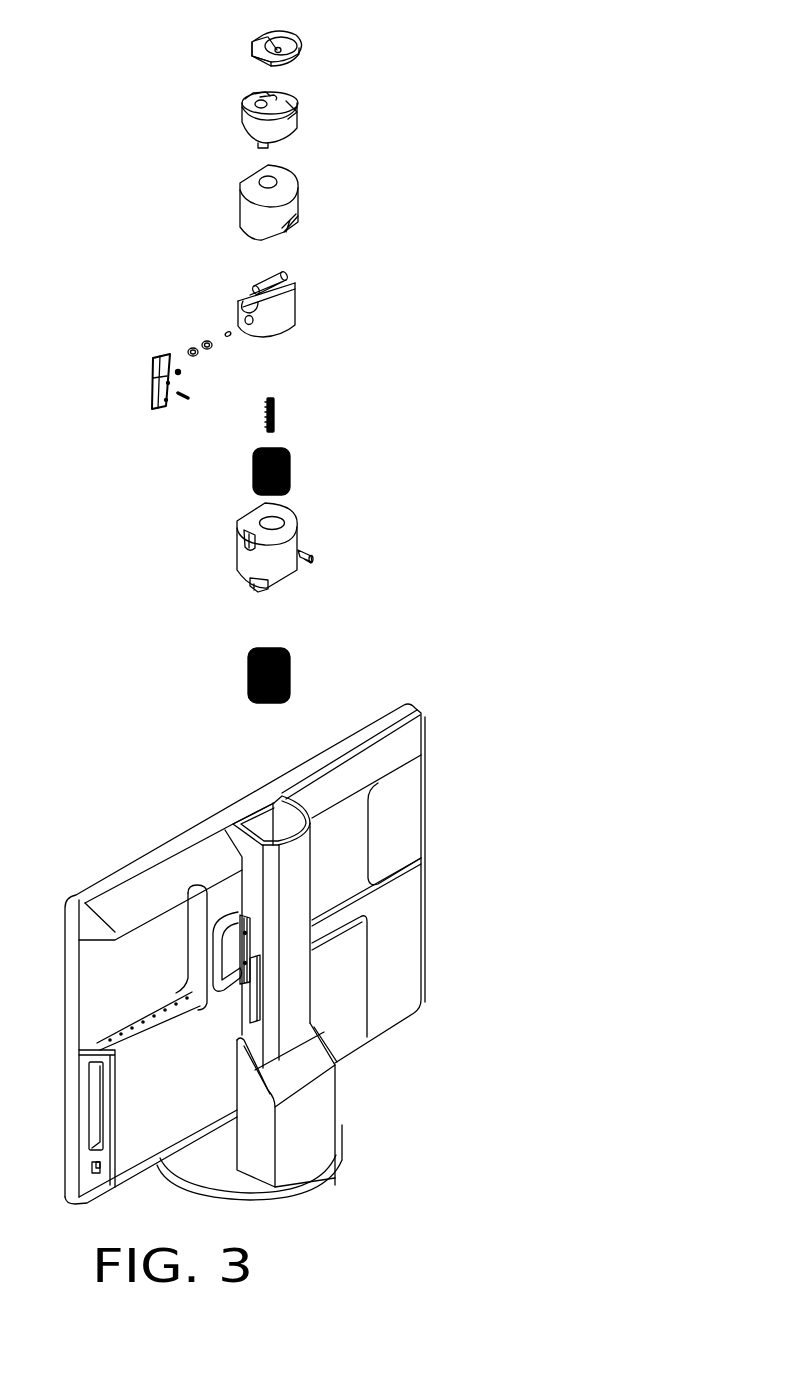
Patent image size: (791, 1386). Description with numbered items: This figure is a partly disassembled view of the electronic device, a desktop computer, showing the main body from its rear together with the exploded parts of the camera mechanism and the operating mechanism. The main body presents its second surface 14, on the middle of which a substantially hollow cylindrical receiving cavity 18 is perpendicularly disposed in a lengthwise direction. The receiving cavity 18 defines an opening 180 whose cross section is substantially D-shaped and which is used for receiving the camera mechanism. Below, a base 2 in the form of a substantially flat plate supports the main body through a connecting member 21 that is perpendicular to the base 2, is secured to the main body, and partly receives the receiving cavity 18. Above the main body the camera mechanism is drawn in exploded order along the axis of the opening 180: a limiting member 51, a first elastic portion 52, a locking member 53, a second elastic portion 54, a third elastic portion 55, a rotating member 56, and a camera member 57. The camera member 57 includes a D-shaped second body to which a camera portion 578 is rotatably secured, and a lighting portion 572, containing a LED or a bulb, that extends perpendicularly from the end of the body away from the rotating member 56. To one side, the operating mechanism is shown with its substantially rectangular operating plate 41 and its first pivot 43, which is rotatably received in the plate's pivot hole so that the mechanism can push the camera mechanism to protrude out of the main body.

The base 2 is at (217, 1160).
The second surface 14 is at (398, 814).
The receiving cavity 18 is at (293, 1023).
The connecting member 21 is at (312, 1126).
The operating plate 41 is at (153, 376).
The first pivot 43 is at (181, 400).
The limiting member 51 is at (280, 560).
The first elastic portion 52 is at (290, 676).
The locking member 53 is at (285, 322).
The second elastic portion 54 is at (290, 477).
The third elastic portion 55 is at (275, 413).
The rotating member 56 is at (290, 205).
The camera member 57 is at (397, 63).
The lighting portion 572 is at (287, 130).
The camera portion 578 is at (290, 58).
The opening 180 is at (259, 822).